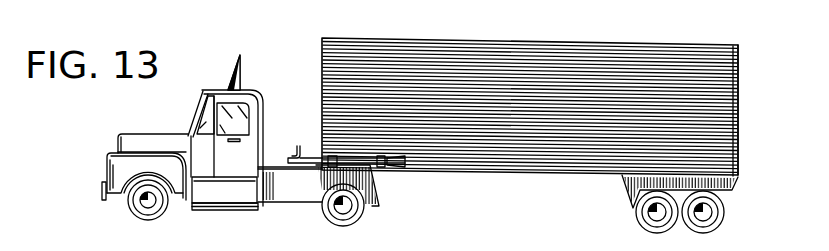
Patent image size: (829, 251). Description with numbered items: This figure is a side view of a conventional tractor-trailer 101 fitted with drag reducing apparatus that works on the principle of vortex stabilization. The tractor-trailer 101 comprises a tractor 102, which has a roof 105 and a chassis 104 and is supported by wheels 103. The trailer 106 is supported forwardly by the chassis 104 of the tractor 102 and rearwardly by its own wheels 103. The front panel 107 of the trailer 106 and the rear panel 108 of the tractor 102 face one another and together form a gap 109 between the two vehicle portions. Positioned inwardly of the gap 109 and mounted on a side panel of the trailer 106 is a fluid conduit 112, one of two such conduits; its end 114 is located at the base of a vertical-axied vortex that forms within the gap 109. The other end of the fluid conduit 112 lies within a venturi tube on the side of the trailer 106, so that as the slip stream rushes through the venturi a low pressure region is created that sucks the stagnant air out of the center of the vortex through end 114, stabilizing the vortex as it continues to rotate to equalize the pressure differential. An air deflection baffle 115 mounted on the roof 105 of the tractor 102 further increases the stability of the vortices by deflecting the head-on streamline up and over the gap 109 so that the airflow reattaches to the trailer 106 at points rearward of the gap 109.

The tractor-trailer 101 is at (224, 76).
The tractor 102 is at (117, 134).
The wheels 103 is at (138, 206).
The chassis 104 is at (305, 192).
The roof 105 is at (253, 90).
The trailer 106 is at (688, 39).
The front panel 107 is at (319, 42).
The rear panel 108 is at (742, 118).
The gap 109 is at (303, 102).
The fluid conduit 112 is at (345, 163).
The end of fluid conduit 114 is at (301, 150).
The air deflection baffle 115 is at (238, 56).